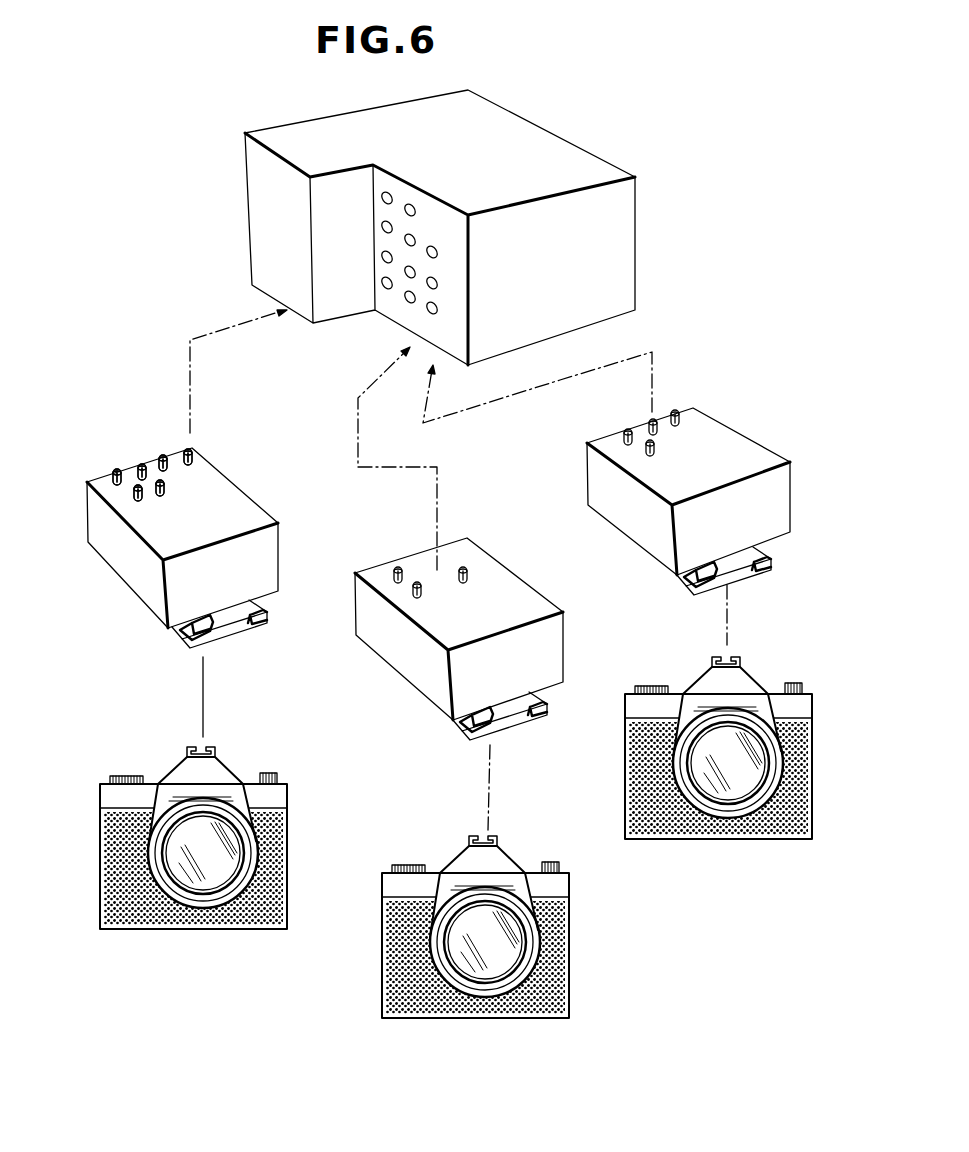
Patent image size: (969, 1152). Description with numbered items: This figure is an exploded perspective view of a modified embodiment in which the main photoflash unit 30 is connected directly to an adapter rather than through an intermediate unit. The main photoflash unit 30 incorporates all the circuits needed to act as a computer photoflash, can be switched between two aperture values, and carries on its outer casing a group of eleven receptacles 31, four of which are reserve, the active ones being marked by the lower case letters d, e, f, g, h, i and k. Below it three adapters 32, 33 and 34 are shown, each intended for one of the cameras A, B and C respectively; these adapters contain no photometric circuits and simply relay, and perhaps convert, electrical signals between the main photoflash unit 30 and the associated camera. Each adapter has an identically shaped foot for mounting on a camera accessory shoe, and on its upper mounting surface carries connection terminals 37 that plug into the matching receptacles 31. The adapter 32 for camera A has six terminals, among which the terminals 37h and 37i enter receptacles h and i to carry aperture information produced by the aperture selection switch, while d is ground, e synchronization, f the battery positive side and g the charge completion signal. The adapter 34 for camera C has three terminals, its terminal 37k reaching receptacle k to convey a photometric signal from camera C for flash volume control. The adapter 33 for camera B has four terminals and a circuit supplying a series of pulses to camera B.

The main photoflash unit 30 is at (567, 153).
The receptacles 31 is at (402, 313).
The adapter 32 is at (258, 515).
The adapter 33 is at (752, 462).
The adapter 34 is at (528, 609).
The connection terminals 37 is at (178, 392).
The aperture information connection terminal 37h is at (190, 454).
The aperture information connection terminal 37i is at (165, 490).
The photometric signal connection terminal 37k is at (465, 567).
The ground receptacle d is at (388, 194).
The synchronization receptacle e is at (412, 206).
The battery positive receptacle f is at (383, 223).
The charge completion receptacle g is at (385, 255).
The aperture information receptacle h is at (385, 282).
The aperture information receptacle i is at (432, 252).
The photometric signal receptacle k is at (412, 272).
The camera A is at (170, 765).
The camera B is at (695, 682).
The camera C is at (448, 860).